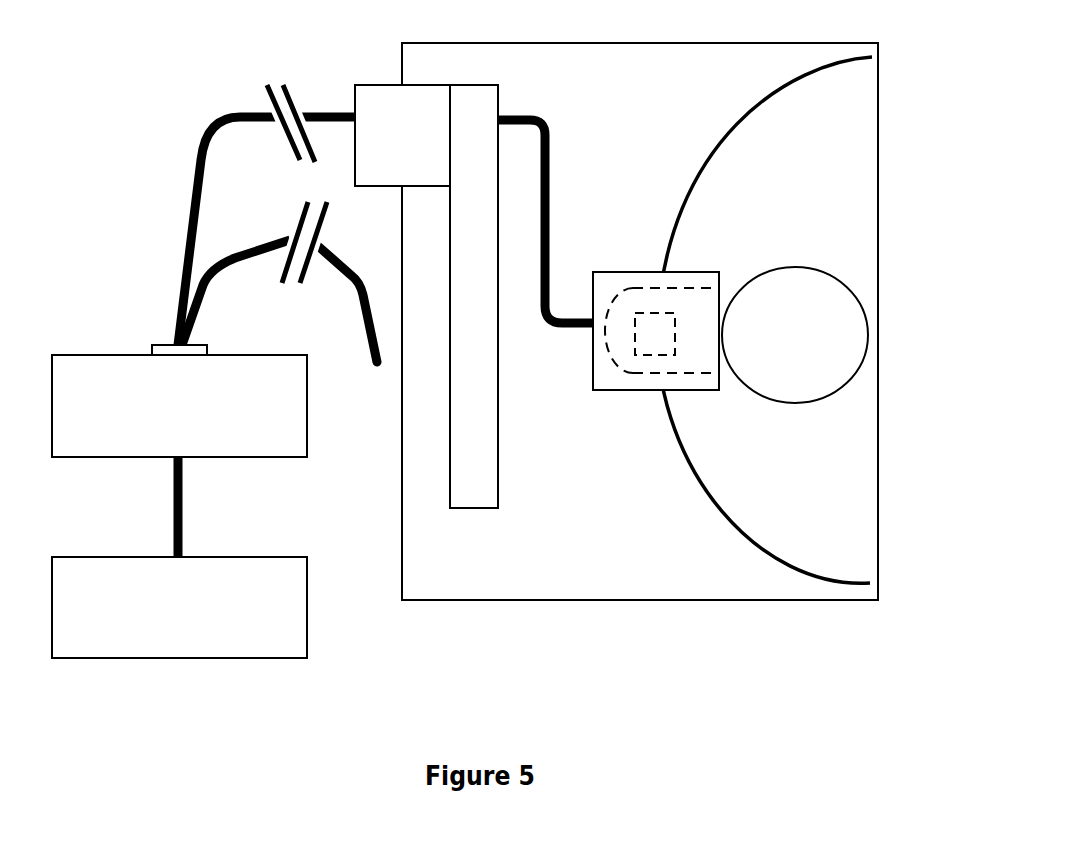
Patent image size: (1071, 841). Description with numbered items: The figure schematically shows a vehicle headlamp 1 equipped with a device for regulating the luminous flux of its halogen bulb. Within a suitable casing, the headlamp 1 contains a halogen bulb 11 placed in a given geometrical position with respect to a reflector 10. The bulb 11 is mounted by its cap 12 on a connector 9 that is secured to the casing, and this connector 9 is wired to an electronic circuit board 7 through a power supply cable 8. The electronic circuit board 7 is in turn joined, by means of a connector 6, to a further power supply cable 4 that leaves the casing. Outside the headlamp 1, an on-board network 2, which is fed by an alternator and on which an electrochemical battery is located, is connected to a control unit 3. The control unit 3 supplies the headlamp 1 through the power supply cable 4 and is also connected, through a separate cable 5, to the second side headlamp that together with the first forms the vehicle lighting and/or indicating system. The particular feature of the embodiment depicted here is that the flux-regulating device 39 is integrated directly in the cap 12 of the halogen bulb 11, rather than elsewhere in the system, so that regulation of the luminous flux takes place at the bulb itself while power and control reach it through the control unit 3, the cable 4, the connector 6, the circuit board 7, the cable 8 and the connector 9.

The headlamp 1 is at (563, 602).
The on-board network 2 is at (285, 642).
The control unit 3 is at (267, 443).
The power supply cable 4 is at (198, 150).
The cable 5 is at (262, 260).
The connector 6 is at (378, 107).
The electronic circuit board 7 is at (467, 94).
The power supply cable 8 is at (550, 133).
The connector 9 is at (602, 392).
The reflector 10 is at (697, 173).
The halogen bulb 11 is at (795, 385).
The cap 12 is at (640, 293).
The flux-regulating device 39 is at (652, 347).